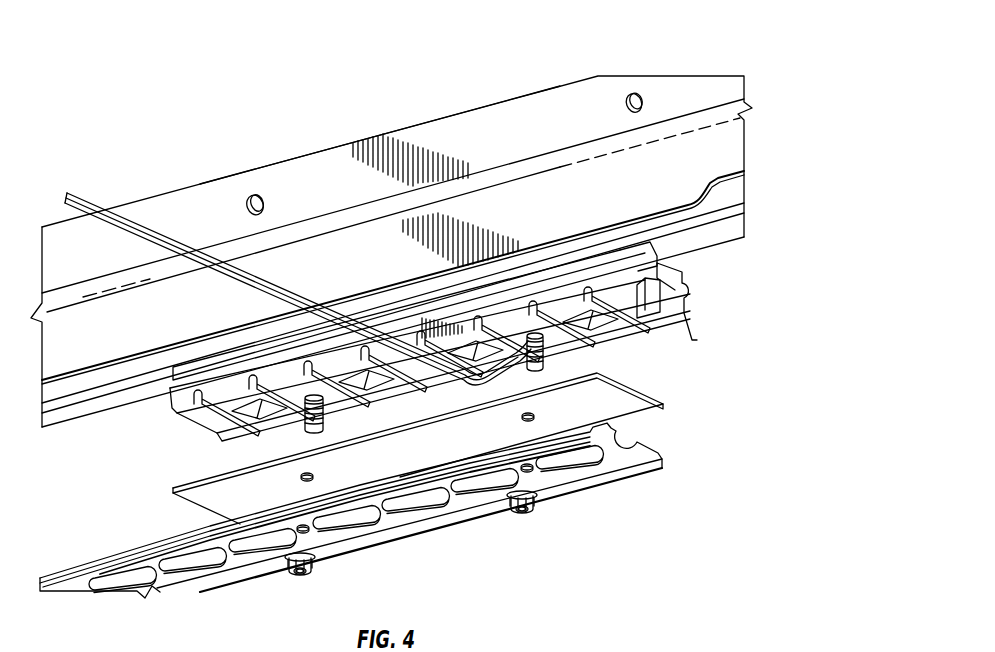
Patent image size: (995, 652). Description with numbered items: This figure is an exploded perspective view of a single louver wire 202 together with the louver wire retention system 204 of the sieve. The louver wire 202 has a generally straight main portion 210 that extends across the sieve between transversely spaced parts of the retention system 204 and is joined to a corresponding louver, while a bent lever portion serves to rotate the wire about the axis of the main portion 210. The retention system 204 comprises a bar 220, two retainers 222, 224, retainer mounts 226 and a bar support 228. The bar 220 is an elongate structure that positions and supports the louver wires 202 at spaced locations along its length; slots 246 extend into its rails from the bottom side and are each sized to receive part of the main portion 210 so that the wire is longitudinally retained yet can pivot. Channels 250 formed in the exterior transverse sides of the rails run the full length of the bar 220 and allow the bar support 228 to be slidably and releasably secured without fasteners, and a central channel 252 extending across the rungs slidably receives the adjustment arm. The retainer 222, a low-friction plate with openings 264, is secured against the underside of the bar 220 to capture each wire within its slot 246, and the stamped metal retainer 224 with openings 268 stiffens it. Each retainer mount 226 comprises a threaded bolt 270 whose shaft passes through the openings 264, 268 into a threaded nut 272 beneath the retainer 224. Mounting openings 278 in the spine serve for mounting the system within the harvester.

The louver wire 202 is at (142, 218).
The louver wire retention system 204 is at (640, 76).
The main portion 210 is at (96, 198).
The bar 220 is at (690, 282).
The retainer 222 is at (662, 400).
The retainer 224 is at (625, 480).
The retainer mounts 226 is at (315, 573).
The bar support 228 is at (288, 157).
The slots 246 is at (587, 289).
The channels 250 is at (170, 390).
The channel 252 is at (662, 262).
The openings 264 is at (533, 416).
The openings 268 is at (308, 534).
The threaded bolt 270 is at (305, 433).
The threaded nut 272 is at (292, 580).
The mounting openings 278 is at (248, 200).